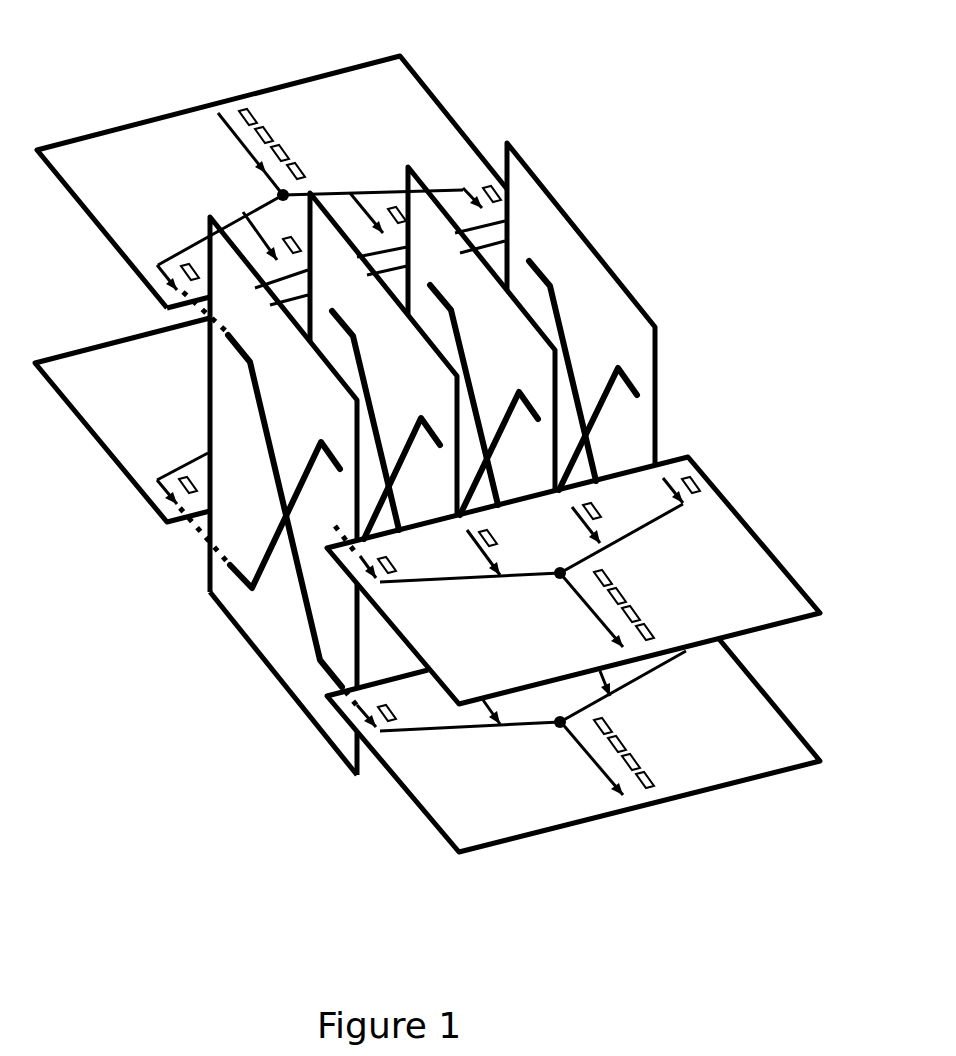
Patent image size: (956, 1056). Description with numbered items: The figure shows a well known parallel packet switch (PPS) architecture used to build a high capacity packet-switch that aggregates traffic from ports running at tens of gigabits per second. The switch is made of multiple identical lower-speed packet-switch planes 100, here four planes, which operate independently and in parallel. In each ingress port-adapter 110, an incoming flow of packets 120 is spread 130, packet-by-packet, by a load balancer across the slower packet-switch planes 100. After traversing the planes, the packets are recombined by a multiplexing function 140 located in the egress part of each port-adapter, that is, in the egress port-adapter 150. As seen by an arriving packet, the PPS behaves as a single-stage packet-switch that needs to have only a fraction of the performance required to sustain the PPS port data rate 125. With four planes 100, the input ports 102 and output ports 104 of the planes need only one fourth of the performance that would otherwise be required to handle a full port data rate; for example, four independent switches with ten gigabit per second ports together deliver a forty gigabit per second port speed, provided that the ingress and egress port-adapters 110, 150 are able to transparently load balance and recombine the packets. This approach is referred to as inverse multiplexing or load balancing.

The packet-switch planes 100 is at (650, 418).
The input ports 102 is at (200, 505).
The output ports 104 is at (347, 555).
The ingress port-adapter 110 is at (413, 73).
The incoming flow of packets 120 is at (240, 108).
The port data rate 125 is at (222, 110).
The spreading 130 is at (190, 248).
The multiplexing function 140 is at (667, 512).
The egress port-adapter 150 is at (776, 553).